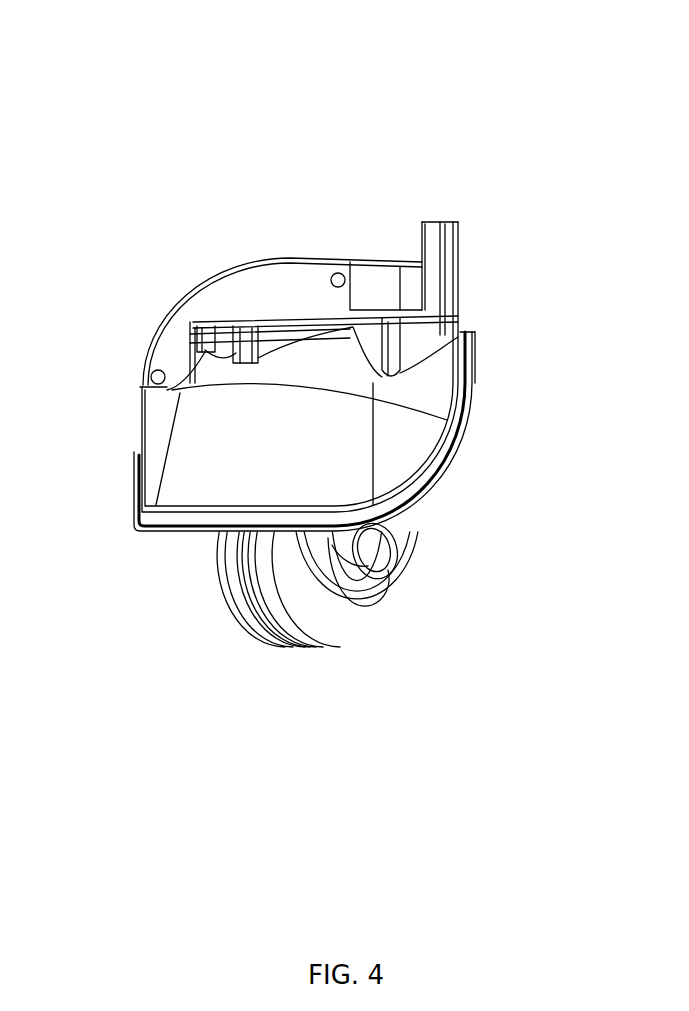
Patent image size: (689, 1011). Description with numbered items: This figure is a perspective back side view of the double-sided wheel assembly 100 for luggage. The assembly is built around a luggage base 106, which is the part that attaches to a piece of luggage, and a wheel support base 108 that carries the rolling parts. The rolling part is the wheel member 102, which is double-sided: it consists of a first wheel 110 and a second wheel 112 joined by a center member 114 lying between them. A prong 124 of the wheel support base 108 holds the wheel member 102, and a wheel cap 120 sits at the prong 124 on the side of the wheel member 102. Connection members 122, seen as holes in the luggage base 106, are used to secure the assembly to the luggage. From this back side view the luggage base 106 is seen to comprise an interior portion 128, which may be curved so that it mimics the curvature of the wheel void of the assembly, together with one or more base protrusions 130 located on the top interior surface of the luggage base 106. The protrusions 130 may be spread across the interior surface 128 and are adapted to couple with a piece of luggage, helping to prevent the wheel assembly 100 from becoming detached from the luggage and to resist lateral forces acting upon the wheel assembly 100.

The double-sided wheel assembly 100 is at (127, 35).
The wheel member 102 is at (185, 568).
The luggage base 106 is at (427, 395).
The wheel support base 108 is at (450, 458).
The first wheel 110 is at (358, 640).
The second wheel 112 is at (237, 612).
The center member 114 is at (286, 636).
The wheel cap 120 is at (377, 545).
The connection members 122 is at (340, 274).
The prong 124 is at (402, 522).
The interior portion 128 is at (222, 437).
The base protrusions 130 is at (253, 340).